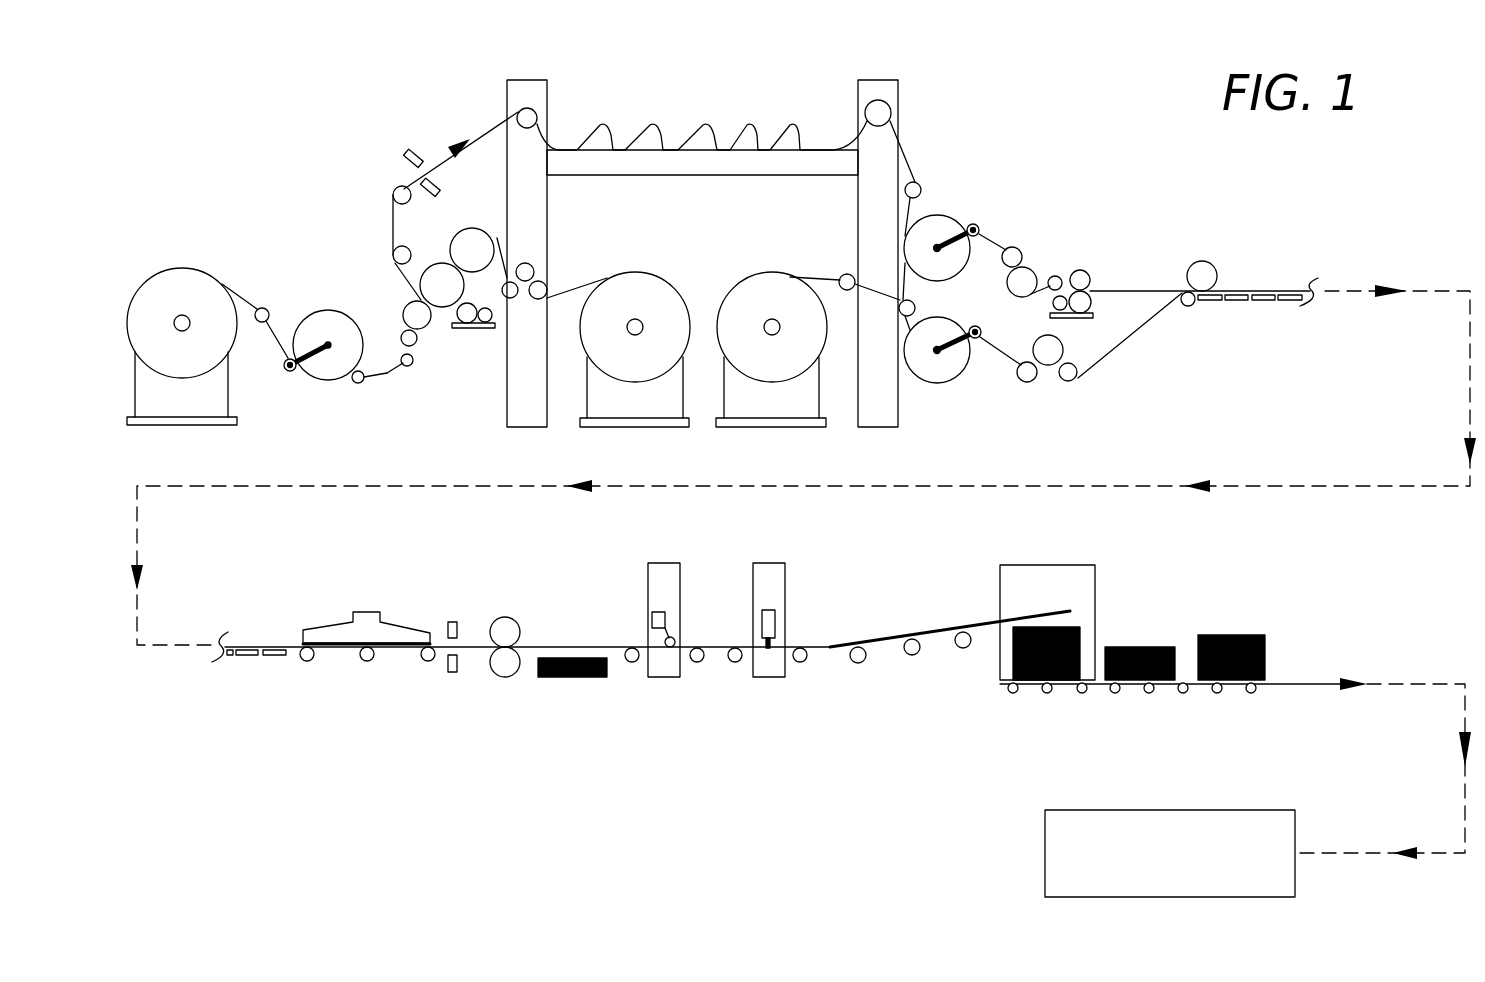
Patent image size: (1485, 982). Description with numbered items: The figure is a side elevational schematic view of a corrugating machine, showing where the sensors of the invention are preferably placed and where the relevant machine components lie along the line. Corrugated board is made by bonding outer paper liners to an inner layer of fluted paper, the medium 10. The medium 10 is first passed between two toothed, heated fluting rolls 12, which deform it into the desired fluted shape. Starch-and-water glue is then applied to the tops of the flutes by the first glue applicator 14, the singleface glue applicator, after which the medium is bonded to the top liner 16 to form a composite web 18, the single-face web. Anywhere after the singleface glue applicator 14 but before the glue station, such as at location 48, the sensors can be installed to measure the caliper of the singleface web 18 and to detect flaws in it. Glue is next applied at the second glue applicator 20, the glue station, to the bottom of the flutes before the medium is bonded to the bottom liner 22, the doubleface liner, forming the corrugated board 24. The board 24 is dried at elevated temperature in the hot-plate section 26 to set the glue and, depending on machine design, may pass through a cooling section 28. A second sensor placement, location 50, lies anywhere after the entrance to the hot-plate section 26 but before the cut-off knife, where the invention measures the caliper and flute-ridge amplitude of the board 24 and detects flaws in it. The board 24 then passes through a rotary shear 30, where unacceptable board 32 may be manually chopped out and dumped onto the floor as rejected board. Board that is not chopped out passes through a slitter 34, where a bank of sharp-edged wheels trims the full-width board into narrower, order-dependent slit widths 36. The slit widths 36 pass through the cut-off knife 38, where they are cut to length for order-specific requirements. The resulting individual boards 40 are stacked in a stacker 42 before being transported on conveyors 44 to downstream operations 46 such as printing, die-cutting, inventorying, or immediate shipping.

The fluted paper medium 10 is at (572, 277).
The fluting rolls 12 is at (430, 264).
The first glue applicator 14 is at (468, 332).
The top liner 16 is at (387, 375).
The composite web 18 is at (480, 137).
The sensor location 48 is at (417, 148).
The second glue applicator 20 is at (1093, 319).
The bottom liner 22 is at (1163, 317).
The corrugated board 24 is at (1262, 290).
The hot-plate section 26 is at (1240, 303).
The cooling section 28 is at (330, 625).
The sensor location 50 is at (447, 625).
The rotary shear 30 is at (512, 618).
The unacceptable board 32 is at (547, 678).
The slitter 34 is at (662, 678).
The slit widths 36 is at (718, 657).
The cut-off knife 38 is at (785, 590).
The individual boards 40 is at (880, 645).
The stacker 42 is at (1095, 598).
The conveyors 44 is at (1297, 685).
The downstream operations 46 is at (1170, 853).